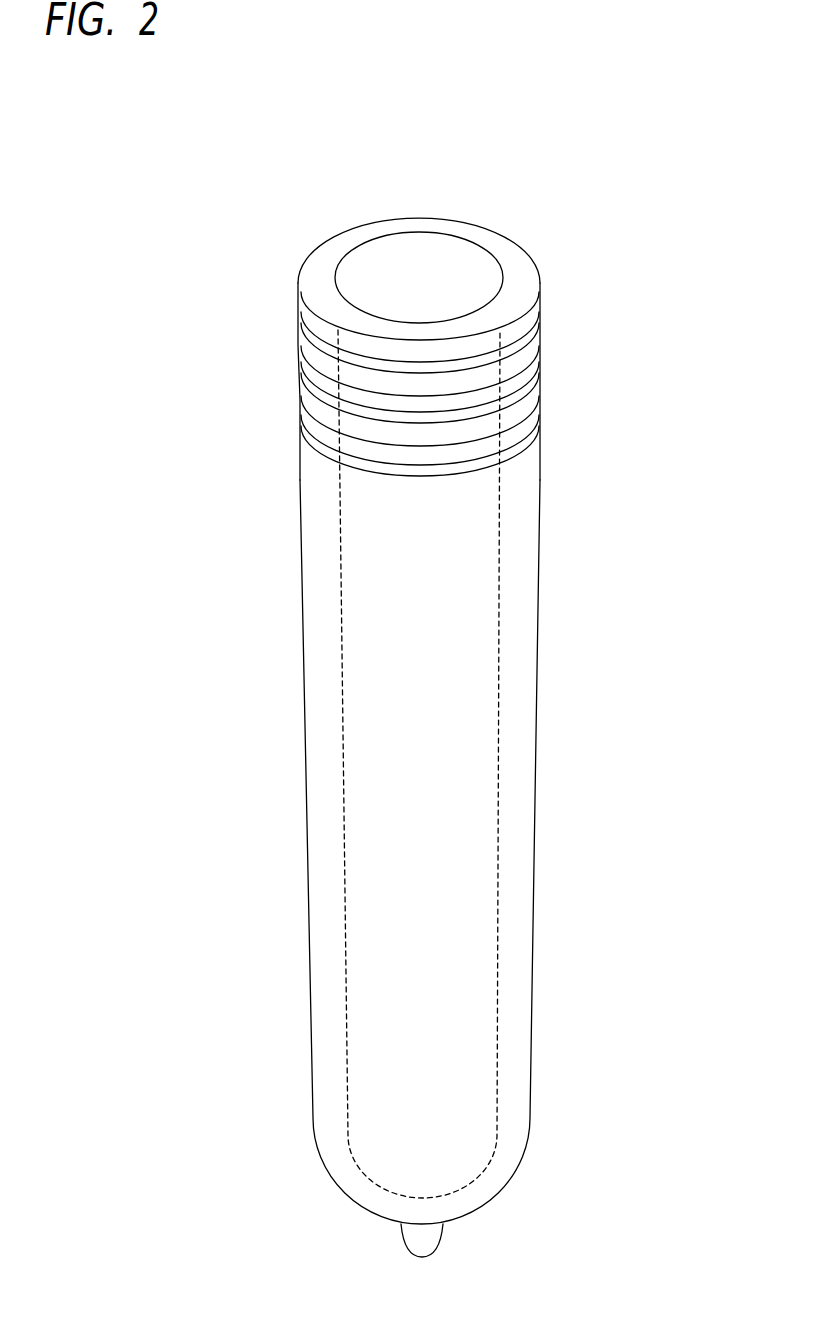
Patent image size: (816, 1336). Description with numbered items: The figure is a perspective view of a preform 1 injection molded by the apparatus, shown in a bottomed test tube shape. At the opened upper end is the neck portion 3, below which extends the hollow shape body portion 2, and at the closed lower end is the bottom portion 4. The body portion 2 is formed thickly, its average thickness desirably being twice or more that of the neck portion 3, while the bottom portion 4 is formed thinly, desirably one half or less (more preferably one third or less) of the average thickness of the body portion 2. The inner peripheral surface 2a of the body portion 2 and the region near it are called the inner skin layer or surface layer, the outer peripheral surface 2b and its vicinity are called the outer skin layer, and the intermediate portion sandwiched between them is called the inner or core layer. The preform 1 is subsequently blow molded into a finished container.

The preform 1 is at (606, 350).
The body portion 2 is at (537, 697).
The inner peripheral surface 2a is at (498, 574).
The outer peripheral surface 2b is at (539, 628).
The neck portion 3 is at (303, 375).
The bottom portion 4 is at (482, 1207).